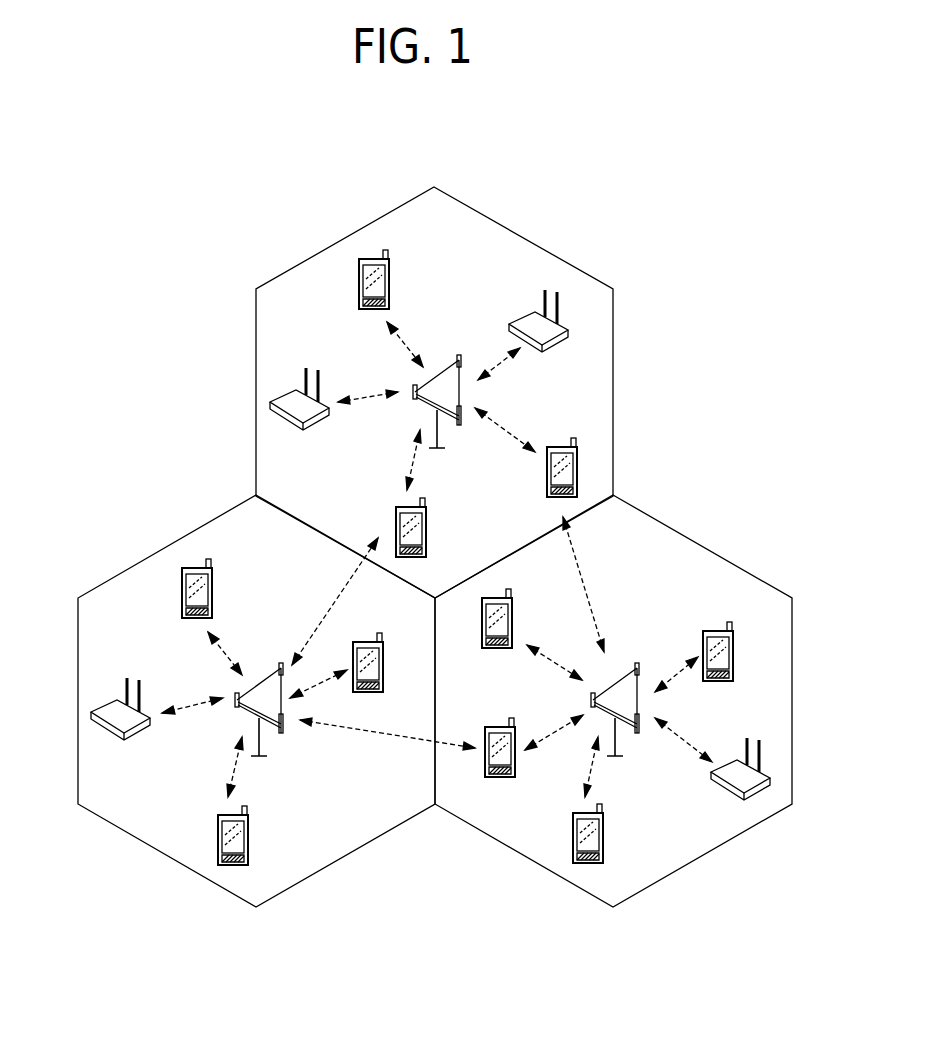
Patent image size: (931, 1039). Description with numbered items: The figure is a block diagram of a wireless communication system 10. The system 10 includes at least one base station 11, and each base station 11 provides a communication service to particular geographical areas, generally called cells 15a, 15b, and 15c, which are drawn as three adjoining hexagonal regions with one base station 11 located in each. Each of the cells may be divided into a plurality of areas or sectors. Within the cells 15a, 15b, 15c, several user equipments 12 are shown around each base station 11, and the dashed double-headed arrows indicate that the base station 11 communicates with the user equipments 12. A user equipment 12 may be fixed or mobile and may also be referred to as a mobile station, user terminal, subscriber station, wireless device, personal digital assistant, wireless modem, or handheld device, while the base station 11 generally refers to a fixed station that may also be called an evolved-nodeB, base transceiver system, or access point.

The wireless communication system 10 is at (688, 296).
The base station 11 is at (450, 370).
The user equipment 12 is at (390, 283).
The cell 15a is at (614, 378).
The cell 15b is at (726, 556).
The cell 15c is at (142, 556).